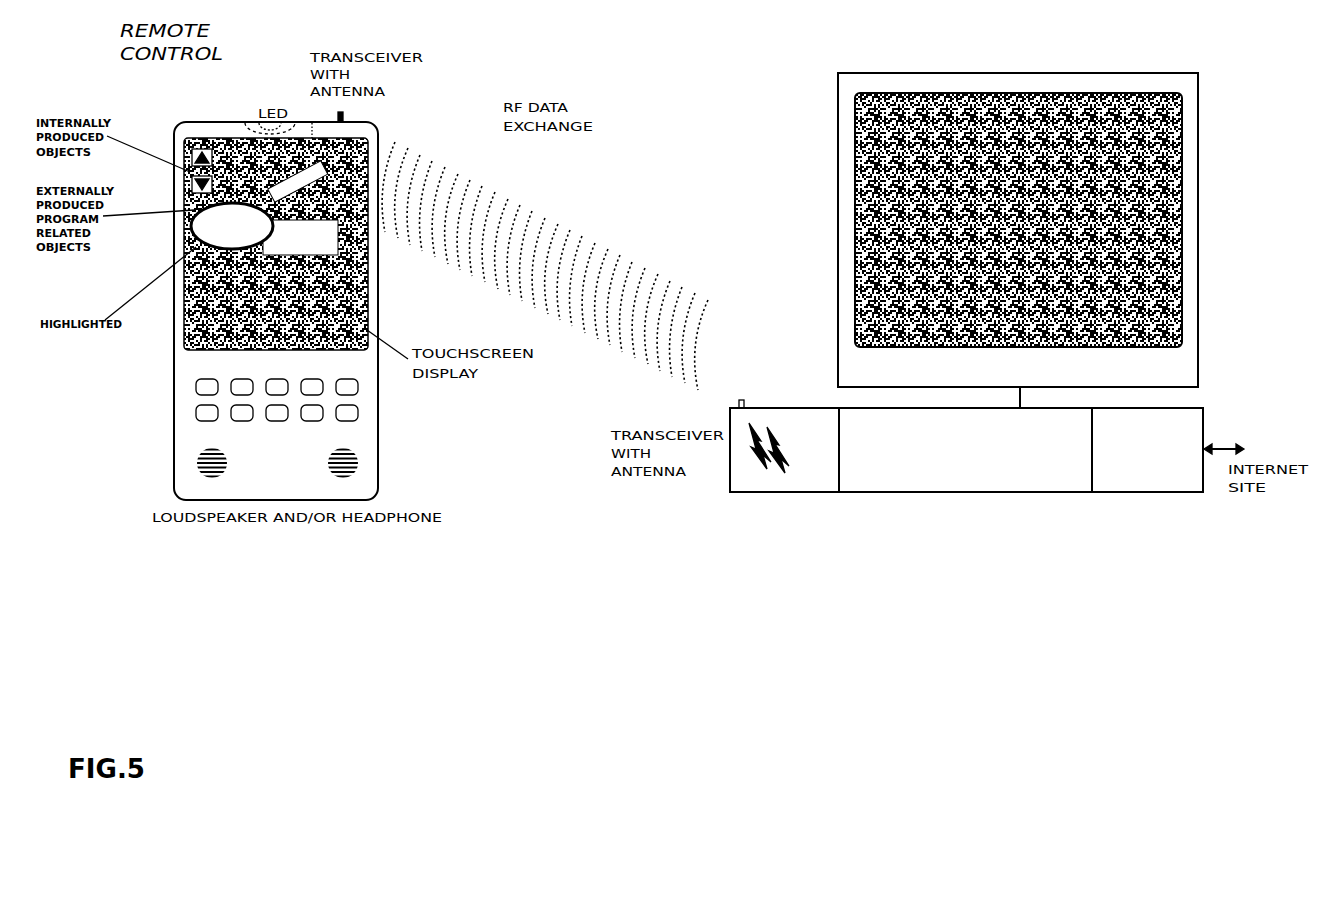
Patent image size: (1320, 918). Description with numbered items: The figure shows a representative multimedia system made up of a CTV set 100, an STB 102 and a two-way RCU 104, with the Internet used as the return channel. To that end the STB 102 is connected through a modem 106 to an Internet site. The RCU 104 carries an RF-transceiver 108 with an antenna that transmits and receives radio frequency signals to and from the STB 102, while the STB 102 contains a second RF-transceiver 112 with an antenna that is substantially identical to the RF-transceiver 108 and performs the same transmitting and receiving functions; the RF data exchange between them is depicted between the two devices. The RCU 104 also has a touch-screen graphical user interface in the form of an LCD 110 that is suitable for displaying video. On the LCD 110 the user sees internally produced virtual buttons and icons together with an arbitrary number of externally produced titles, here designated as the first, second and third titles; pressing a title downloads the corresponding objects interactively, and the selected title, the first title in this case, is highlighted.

The CTV set 100 is at (1198, 190).
The STB 102 is at (993, 487).
The two-way RCU 104 is at (315, 298).
The modem 106 is at (1185, 485).
The RF-transceiver 108 is at (343, 117).
The LCD 110 is at (354, 303).
The second RF-transceiver 112 is at (773, 485).